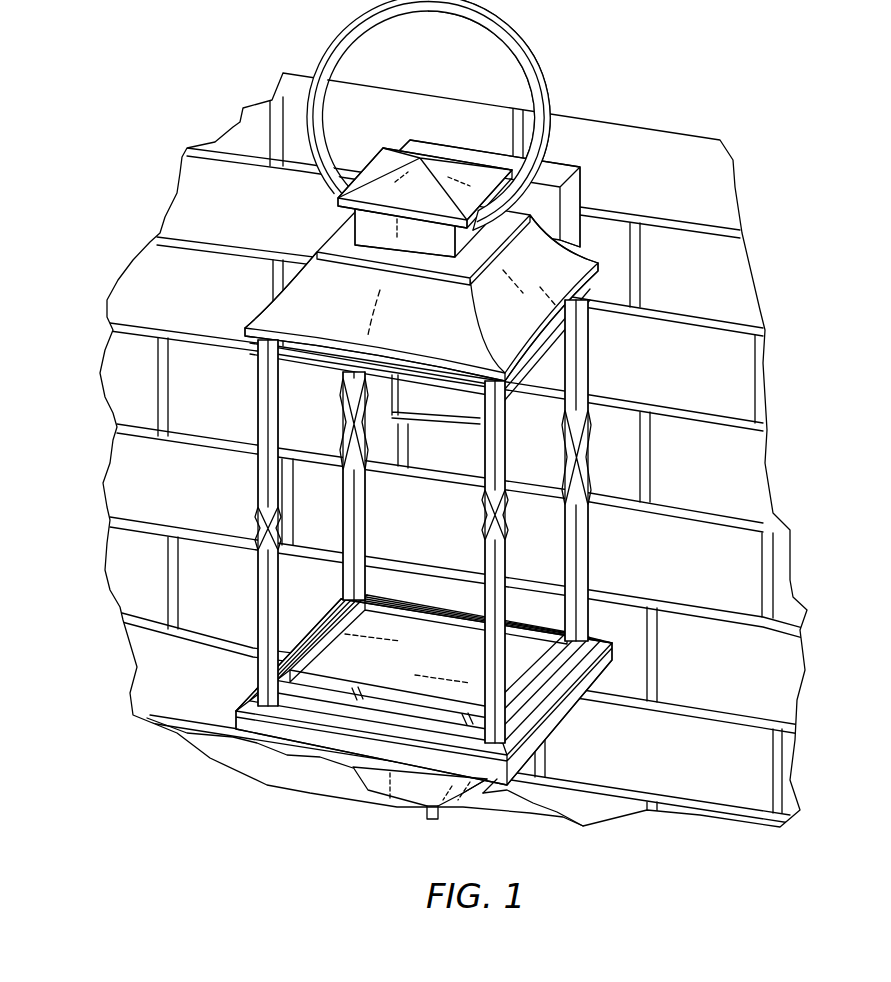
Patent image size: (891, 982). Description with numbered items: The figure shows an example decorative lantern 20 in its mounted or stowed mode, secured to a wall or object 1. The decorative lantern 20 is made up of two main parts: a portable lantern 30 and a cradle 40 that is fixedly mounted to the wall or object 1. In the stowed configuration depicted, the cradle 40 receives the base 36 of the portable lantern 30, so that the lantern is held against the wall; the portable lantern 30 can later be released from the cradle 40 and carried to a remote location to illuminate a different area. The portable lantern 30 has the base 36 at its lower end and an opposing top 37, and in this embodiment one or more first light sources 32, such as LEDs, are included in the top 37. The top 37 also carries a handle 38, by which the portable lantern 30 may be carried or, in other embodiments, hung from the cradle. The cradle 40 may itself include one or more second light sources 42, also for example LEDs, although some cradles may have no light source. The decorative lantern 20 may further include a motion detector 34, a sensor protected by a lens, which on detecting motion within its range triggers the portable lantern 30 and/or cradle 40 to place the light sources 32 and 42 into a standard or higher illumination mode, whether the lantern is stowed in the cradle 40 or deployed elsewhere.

The wall or object 1 is at (457, 431).
The decorative lantern 20 is at (233, 217).
The portable lantern 30 is at (378, 431).
The first light source 32 is at (347, 392).
The motion detector 34 is at (556, 241).
The base 36 is at (562, 661).
The top 37 is at (548, 284).
The handle 38 is at (514, 44).
The cradle 40 is at (347, 788).
The second light source 42 is at (557, 812).